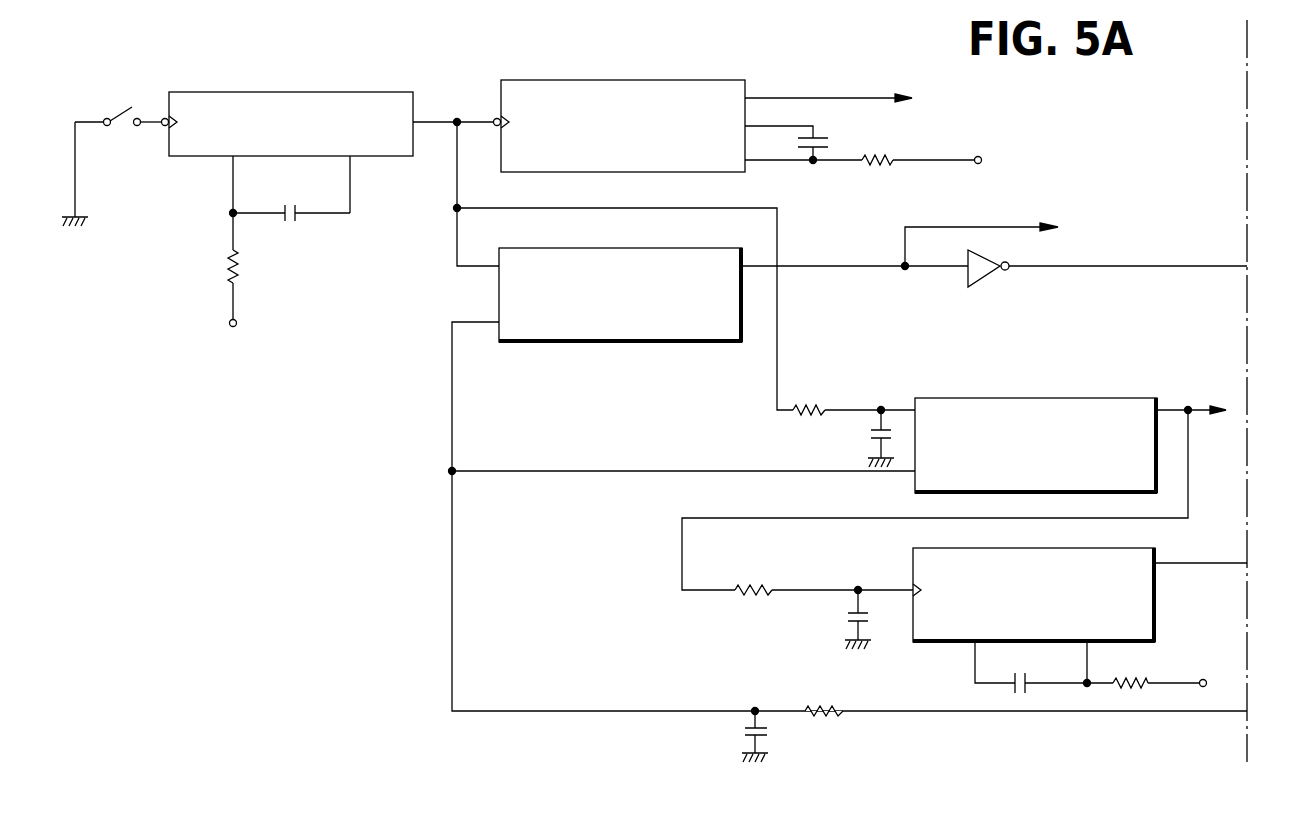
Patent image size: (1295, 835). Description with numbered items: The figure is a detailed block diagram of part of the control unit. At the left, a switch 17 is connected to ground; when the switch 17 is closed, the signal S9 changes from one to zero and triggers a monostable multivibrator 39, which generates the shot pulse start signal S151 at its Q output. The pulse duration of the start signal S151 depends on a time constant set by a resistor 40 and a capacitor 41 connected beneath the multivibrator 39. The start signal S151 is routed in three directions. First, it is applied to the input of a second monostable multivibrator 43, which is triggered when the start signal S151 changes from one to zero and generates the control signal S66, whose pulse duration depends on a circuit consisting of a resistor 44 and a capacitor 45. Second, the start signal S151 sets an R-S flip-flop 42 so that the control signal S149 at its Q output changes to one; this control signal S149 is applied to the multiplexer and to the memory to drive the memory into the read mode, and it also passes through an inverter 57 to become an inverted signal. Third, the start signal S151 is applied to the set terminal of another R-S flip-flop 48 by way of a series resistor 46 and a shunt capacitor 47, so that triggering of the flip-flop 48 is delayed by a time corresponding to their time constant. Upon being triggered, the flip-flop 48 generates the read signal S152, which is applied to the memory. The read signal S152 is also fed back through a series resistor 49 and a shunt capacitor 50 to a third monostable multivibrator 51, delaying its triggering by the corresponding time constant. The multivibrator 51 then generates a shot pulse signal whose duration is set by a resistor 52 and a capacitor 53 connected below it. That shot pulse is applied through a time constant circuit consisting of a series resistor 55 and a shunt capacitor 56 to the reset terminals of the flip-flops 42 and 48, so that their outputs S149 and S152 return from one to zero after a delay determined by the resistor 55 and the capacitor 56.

The switch 17 is at (123, 112).
The signal S9 is at (150, 125).
The monostable multivibrator 39 is at (305, 92).
The shot pulse start signal S151 is at (445, 120).
The resistor 40 is at (228, 268).
The capacitor 41 is at (290, 205).
The monostable multivibrator 43 is at (748, 92).
The control signal S66 is at (862, 96).
The resistor 44 is at (820, 142).
The capacitor 45 is at (870, 166).
The R-S flip-flop 42 is at (628, 343).
The control signal S149 is at (838, 268).
The inverter 57 is at (985, 283).
The series resistor 46 is at (805, 405).
The shunt capacitor 47 is at (870, 436).
The R-S flip-flop 48 is at (1078, 398).
The read signal S152 is at (1198, 408).
The series resistor 49 is at (755, 585).
The shunt capacitor 50 is at (846, 620).
The monostable multivibrator 51 is at (913, 572).
The capacitor 53 is at (1027, 672).
The resistor 52 is at (1135, 678).
The series resistor 55 is at (825, 708).
The shunt capacitor 56 is at (742, 733).